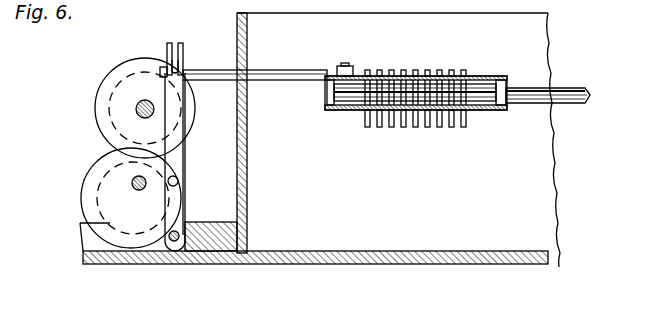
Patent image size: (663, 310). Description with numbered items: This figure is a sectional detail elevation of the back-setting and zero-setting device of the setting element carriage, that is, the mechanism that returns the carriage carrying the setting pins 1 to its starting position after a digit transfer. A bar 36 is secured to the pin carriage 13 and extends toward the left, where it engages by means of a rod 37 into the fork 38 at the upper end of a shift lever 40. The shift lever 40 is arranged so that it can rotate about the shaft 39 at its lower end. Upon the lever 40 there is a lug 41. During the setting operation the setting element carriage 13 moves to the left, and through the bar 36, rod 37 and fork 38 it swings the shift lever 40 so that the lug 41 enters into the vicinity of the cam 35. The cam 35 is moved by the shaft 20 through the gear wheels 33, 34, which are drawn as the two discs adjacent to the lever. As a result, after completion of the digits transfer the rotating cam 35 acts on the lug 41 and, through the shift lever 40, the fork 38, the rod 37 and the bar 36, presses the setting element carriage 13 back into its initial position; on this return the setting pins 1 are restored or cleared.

The setting pins 1 is at (437, 126).
The setting element carriage 13 is at (489, 80).
The shaft 20 is at (137, 108).
The gear wheel 33 is at (118, 72).
The gear wheel 34 is at (133, 232).
The cam 35 is at (95, 184).
The bar 36 is at (289, 76).
The rod 37 is at (181, 70).
The fork 38 is at (167, 52).
The shaft 39 is at (178, 232).
The shift lever 40 is at (178, 135).
The lug 41 is at (177, 178).